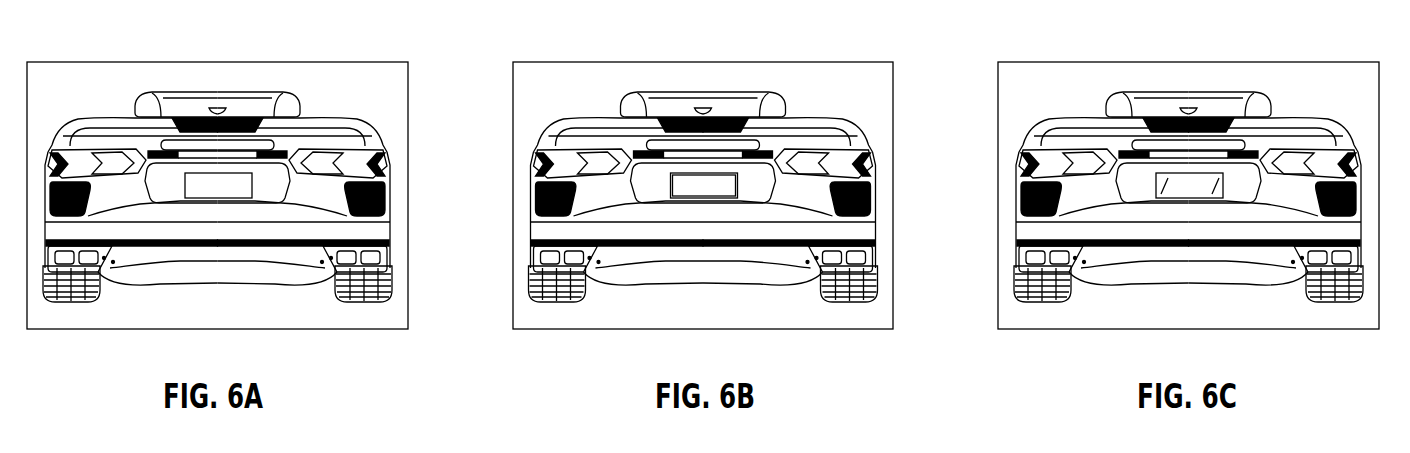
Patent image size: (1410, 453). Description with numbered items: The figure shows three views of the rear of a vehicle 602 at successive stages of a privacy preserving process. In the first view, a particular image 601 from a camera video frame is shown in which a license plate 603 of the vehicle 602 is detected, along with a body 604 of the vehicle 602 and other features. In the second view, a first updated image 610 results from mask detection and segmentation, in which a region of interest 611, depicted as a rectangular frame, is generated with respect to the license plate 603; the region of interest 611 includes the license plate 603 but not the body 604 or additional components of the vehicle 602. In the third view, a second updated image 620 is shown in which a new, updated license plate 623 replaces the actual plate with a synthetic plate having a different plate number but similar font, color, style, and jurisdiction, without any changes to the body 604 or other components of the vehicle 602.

In FIG. 6A, the image 601 is at (352, 50).
In FIG. 6A, the vehicle 602 is at (261, 232).
In FIG. 6B, the vehicle 602 is at (697, 232).
In FIG. 6C, the vehicle 602 is at (1144, 232).
In FIG. 6A, the license plate 603 is at (217, 198).
In FIG. 6B, the license plate 603 is at (702, 198).
In FIG. 6A, the body 604 is at (117, 200).
In FIG. 6B, the body 604 is at (603, 200).
In FIG. 6C, the body 604 is at (1098, 202).
In FIG. 6B, the first updated image 610 is at (840, 50).
In FIG. 6B, the region of interest 611 is at (682, 172).
In FIG. 6C, the second updated image 620 is at (1320, 50).
In FIG. 6C, the updated license plate 623 is at (1187, 198).